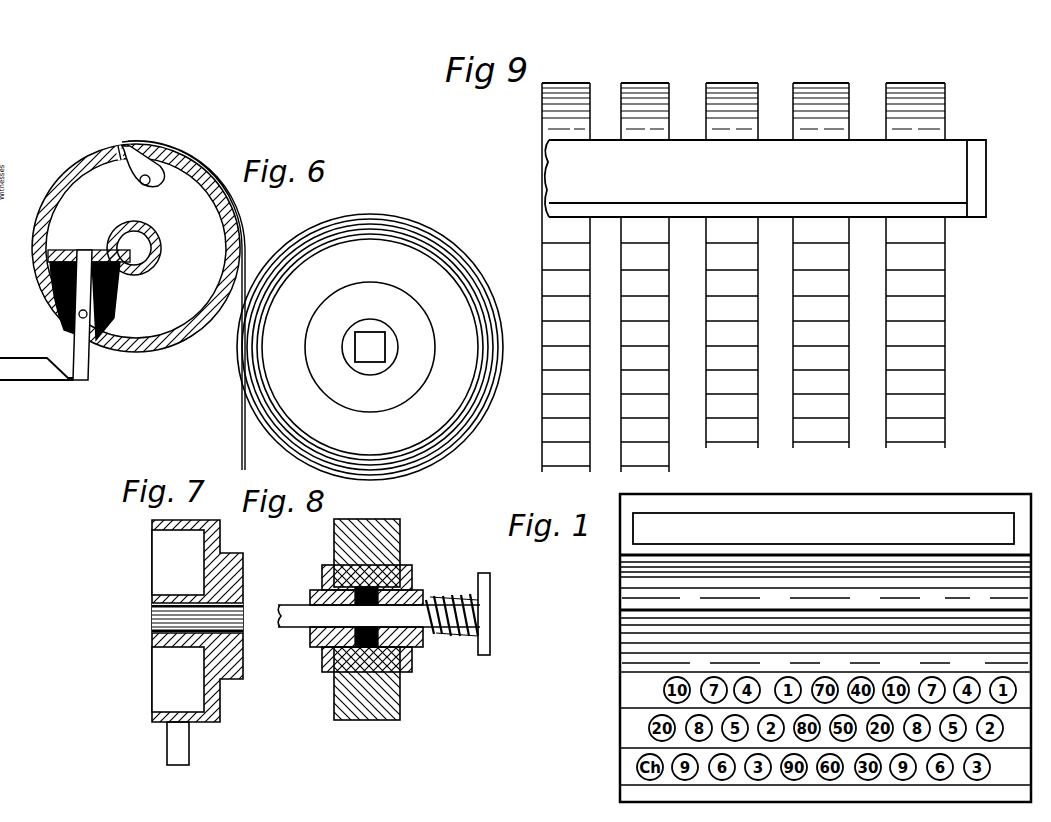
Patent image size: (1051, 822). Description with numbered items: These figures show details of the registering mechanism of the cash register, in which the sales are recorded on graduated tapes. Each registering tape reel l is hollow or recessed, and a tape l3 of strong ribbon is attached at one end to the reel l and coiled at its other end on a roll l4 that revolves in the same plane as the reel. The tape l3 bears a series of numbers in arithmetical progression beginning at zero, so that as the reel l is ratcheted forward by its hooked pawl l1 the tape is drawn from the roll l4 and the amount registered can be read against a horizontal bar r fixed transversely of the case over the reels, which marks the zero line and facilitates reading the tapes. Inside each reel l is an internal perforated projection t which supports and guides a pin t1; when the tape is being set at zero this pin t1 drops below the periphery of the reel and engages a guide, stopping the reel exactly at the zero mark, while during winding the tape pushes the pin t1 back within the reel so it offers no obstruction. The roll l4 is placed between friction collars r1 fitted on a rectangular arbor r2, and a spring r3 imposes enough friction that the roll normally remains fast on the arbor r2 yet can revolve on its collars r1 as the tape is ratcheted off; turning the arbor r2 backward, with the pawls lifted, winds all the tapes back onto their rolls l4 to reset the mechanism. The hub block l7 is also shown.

In FIG. 6, the registering tape reel l is at (136, 248).
In FIG. 7, the registering tape reel l is at (162, 552).
In FIG. 6, the hooked pawl l1 is at (12, 366).
In FIG. 6, the tape l3 is at (232, 318).
In FIG. 9, the tape l3 is at (743, 277).
In FIG. 6, the tape roll l4 is at (370, 347).
In FIG. 8, the hub block l7 is at (392, 545).
In FIG. 6, the internal perforated projection t is at (58, 262).
In FIG. 6, the pin t1 is at (64, 362).
In FIG. 7, the pin t1 is at (176, 750).
In FIG. 9, the horizontal bar r is at (765, 178).
In FIG. 6, the friction collar r1 is at (134, 248).
In FIG. 8, the friction collar r1 is at (405, 568).
In FIG. 8, the rectangular arbor r2 is at (292, 612).
In FIG. 8, the spring r3 is at (449, 598).